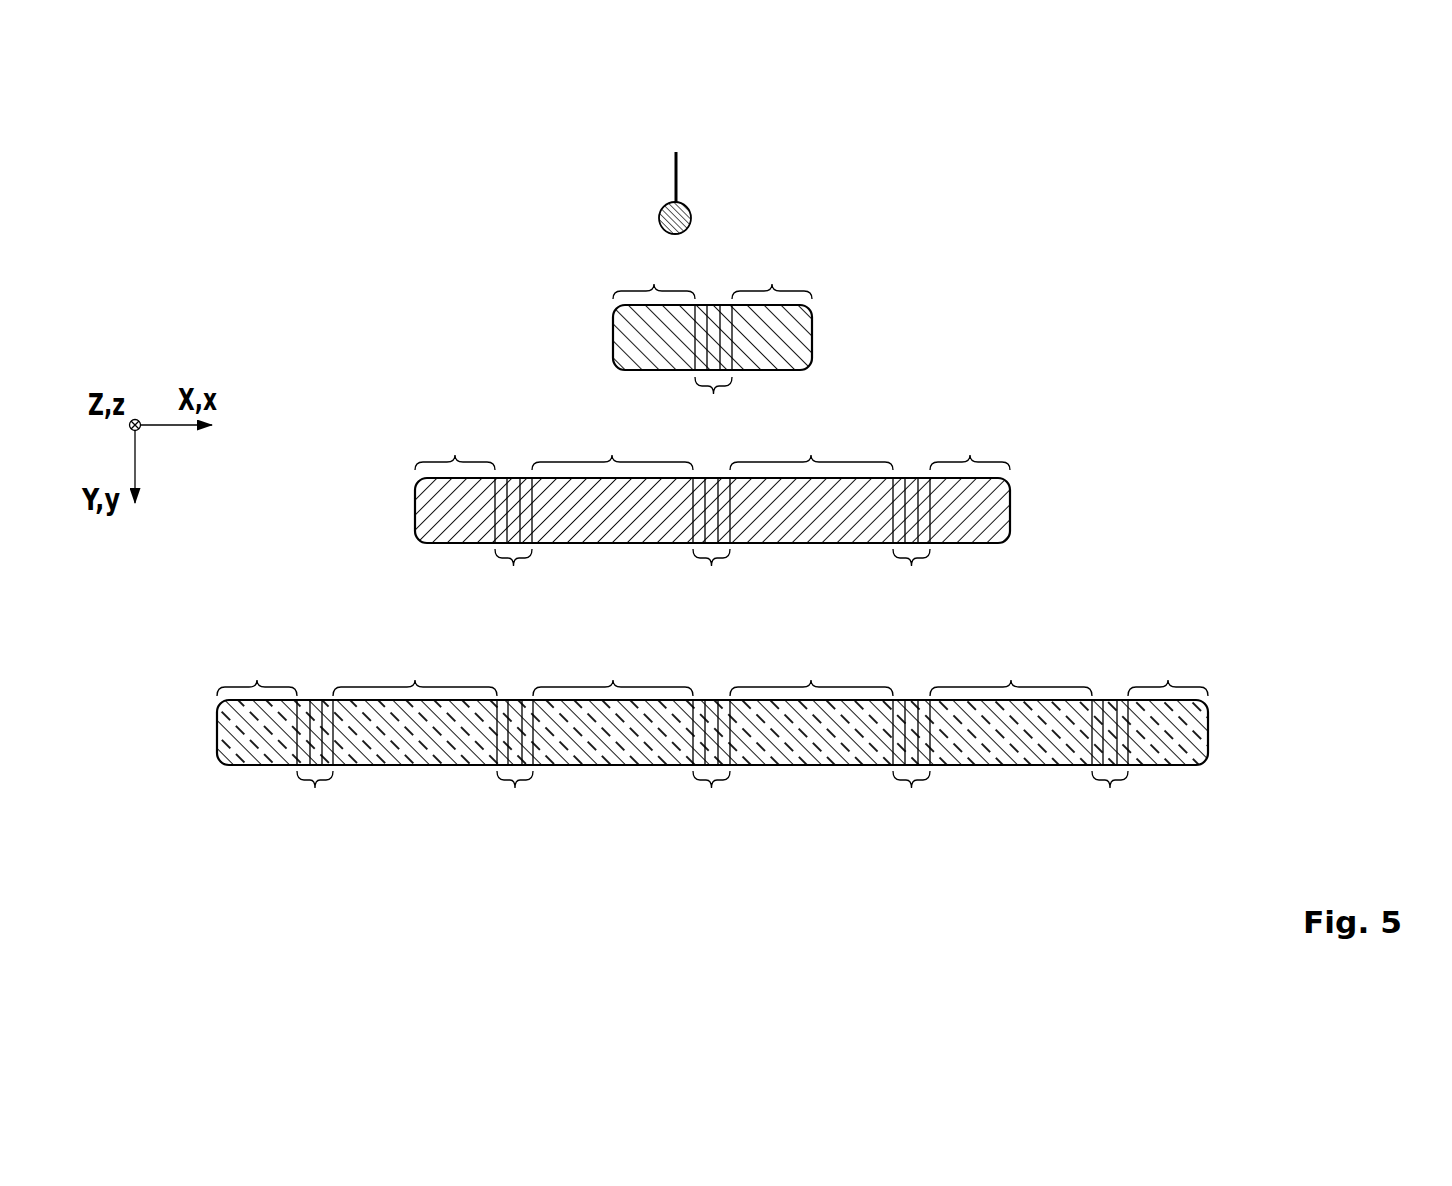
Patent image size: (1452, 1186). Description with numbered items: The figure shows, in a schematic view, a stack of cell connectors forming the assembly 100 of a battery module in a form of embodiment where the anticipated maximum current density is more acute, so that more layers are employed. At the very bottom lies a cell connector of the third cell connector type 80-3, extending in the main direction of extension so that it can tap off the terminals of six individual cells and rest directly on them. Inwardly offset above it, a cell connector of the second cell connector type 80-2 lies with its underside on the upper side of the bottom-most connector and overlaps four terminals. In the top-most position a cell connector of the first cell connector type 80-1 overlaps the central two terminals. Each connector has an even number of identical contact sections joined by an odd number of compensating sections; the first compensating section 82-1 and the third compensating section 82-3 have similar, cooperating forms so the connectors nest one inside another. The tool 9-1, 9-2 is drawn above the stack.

The battery cell arrangement / stack of electrode strips 100 is at (1375, 300).
The first electrode strip with one bending region 80-1 is at (830, 298).
The second electrode strip with three bending regions 80-2 is at (1032, 443).
The third electrode strip with five bending regions 80-3 is at (1230, 665).
The first bending region 82-1 is at (724, 370).
The third bending region 82-3 is at (732, 765).
The folding tool / mandrel 9-1 is at (618, 193).
The folding tool / mandrel 9-2 is at (676, 170).